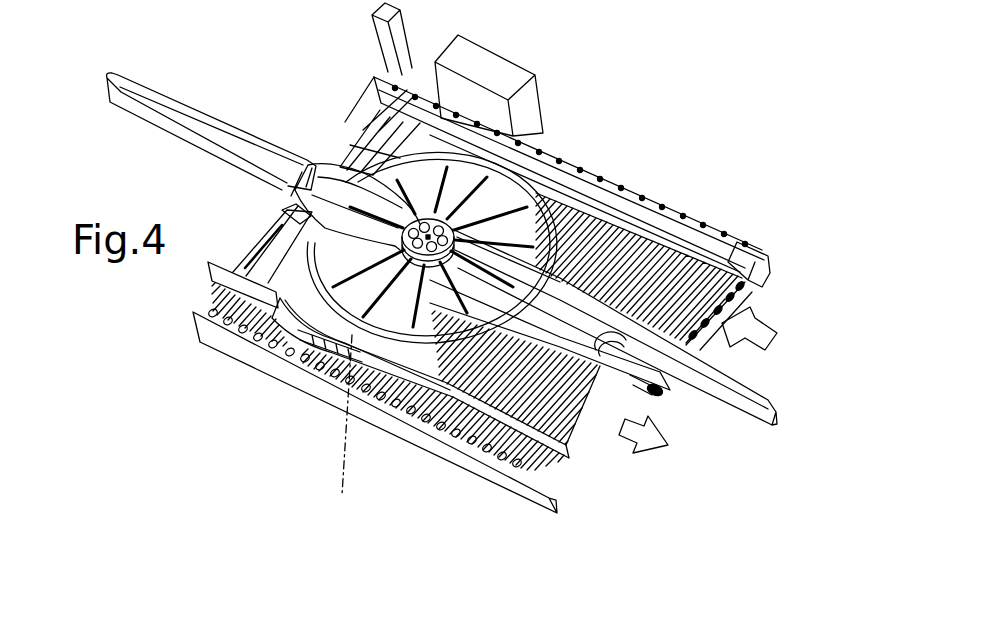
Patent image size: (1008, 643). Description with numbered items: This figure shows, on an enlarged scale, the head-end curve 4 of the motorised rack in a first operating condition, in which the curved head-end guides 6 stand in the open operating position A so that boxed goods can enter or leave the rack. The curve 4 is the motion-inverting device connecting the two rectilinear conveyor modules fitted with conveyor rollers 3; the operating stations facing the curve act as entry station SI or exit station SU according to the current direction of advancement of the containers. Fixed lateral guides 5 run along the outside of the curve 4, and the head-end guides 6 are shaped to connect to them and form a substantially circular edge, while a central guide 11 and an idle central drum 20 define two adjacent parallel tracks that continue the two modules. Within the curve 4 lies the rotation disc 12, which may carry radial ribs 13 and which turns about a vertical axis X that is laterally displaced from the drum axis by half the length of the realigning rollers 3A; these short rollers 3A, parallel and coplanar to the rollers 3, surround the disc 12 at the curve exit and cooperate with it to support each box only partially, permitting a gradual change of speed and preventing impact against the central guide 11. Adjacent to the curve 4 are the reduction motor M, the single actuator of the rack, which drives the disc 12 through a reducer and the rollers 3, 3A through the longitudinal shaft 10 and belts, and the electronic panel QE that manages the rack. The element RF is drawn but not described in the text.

The open operating position A is at (236, 79).
The electronic panel QE is at (483, 64).
The head-end curve 4 is at (655, 155).
The head-end guides 6 is at (330, 173).
The central drum 20 is at (499, 175).
The central guide 11 is at (559, 290).
The fixed lateral guides 5 is at (674, 230).
The roller return RF is at (734, 250).
The conveyor rollers 3 is at (684, 258).
The entry station SI is at (758, 309).
The realigning rollers 3A is at (323, 350).
The radial ribs 13 is at (358, 360).
The rotation disc 12 is at (440, 313).
The vertical axis of rotation X is at (341, 426).
The longitudinal shaft 10 is at (655, 393).
The reduction motor M is at (589, 378).
The exit station SU is at (554, 479).